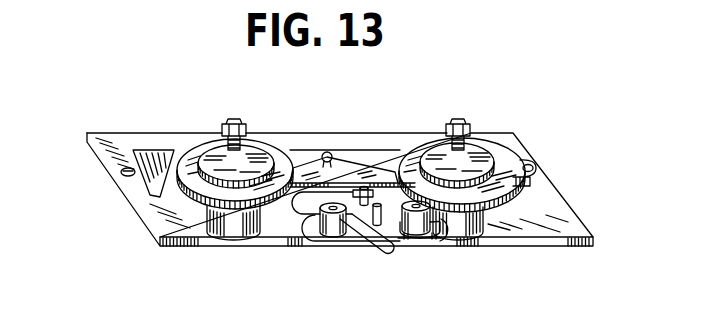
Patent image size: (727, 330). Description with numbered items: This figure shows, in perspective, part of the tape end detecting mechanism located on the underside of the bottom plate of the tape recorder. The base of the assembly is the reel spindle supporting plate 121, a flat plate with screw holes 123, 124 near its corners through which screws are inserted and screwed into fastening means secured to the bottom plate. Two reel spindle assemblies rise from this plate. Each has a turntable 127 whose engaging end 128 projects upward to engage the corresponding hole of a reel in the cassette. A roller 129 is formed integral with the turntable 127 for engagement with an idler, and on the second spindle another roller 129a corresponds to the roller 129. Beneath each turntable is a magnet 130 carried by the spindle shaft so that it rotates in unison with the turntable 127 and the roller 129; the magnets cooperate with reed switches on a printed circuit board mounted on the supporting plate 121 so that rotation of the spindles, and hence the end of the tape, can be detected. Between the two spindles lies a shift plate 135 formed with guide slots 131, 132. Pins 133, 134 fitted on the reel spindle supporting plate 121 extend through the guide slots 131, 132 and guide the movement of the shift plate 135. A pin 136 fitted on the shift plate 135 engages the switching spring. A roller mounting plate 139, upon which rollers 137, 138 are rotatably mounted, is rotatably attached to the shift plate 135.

The reel spindle supporting plate 121 is at (118, 133).
The screw hole 123 is at (130, 177).
The screw hole 124 is at (530, 160).
The turntable 127 is at (254, 165).
The engaging end of reel spindle 128 is at (228, 121).
The roller 129 is at (293, 167).
The roller 129a is at (502, 190).
The magnet 130 is at (233, 225).
The guide slot 131 is at (310, 214).
The guide slot 132 is at (404, 228).
The pin 133 is at (372, 206).
The pin 134 is at (396, 176).
The shift plate 135 is at (382, 243).
The pin 136 is at (364, 186).
The roller 137 is at (330, 234).
The roller 138 is at (437, 222).
The roller mounting plate 139 is at (427, 240).